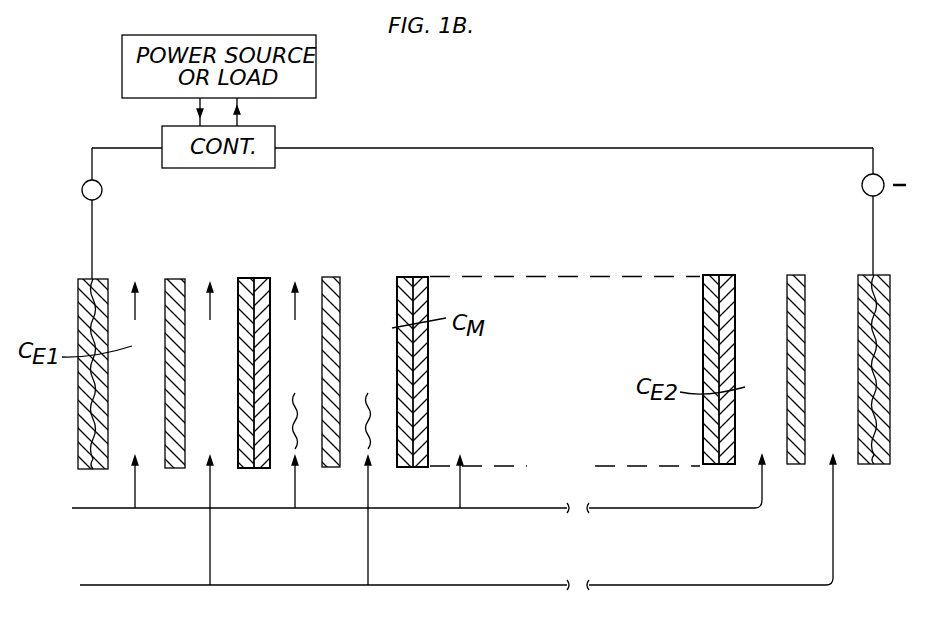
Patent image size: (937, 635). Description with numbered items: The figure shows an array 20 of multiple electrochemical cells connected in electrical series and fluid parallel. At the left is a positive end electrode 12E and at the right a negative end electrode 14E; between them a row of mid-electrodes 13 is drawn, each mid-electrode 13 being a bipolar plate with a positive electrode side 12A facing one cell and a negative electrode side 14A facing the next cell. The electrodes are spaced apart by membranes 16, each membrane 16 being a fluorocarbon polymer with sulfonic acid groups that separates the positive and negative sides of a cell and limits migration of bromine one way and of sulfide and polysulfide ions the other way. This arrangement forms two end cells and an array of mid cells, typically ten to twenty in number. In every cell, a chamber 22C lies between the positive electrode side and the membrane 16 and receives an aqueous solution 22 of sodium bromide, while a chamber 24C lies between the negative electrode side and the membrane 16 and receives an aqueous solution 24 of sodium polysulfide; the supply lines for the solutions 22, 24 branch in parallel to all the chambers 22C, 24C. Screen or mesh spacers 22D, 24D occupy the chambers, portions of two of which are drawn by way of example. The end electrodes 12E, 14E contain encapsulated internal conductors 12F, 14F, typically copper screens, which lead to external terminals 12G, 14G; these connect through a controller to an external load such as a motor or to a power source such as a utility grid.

The external terminal 12G is at (84, 184).
The internal conductor 12F is at (92, 240).
The end electrode 12E is at (80, 303).
The membrane 16 is at (172, 279).
The mid-electrode 13 is at (250, 277).
The negative electrode side 14A is at (240, 280).
The positive electrode side 12A is at (269, 278).
The array 20 is at (455, 213).
The chamber 22C is at (218, 330).
The chamber 24C is at (293, 330).
The screen or mesh spacer 22D is at (293, 420).
The screen or mesh spacer 24D is at (370, 422).
The aqueous solution of NaBr 22 is at (395, 499).
The aqueous solution of Na2Sx 24 is at (433, 543).
The external terminal 14G is at (862, 185).
The internal conductor 14F is at (873, 220).
The end electrode 14E is at (858, 276).